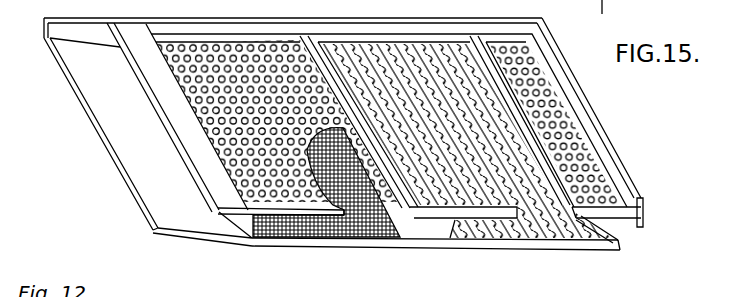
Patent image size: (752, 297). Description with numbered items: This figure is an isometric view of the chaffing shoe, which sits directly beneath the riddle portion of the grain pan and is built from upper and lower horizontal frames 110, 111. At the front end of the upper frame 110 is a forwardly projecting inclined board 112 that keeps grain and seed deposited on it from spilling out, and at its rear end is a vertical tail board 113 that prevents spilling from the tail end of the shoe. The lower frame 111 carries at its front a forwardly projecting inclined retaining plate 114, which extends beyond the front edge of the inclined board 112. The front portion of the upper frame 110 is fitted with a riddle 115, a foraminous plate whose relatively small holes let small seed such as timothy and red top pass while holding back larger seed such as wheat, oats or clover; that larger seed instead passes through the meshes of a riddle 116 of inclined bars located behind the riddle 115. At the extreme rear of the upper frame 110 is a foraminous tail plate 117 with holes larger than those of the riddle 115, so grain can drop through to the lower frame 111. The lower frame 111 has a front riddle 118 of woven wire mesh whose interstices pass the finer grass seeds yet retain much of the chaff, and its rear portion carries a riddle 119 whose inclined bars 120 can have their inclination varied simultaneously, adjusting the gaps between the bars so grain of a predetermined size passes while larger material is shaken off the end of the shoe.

The upper horizontal frame 110 is at (250, 242).
The lower horizontal frame 111 is at (271, 240).
The inclined board 112 is at (213, 217).
The vertical tail board 113 is at (600, 124).
The inclined retaining plate 114 is at (128, 175).
The riddle 115 is at (325, 207).
The riddle 116 is at (422, 50).
The foraminous tail plate 117 is at (550, 103).
The front riddle 118 is at (380, 230).
The riddle 119 is at (497, 222).
The inclined bars 120 is at (543, 233).